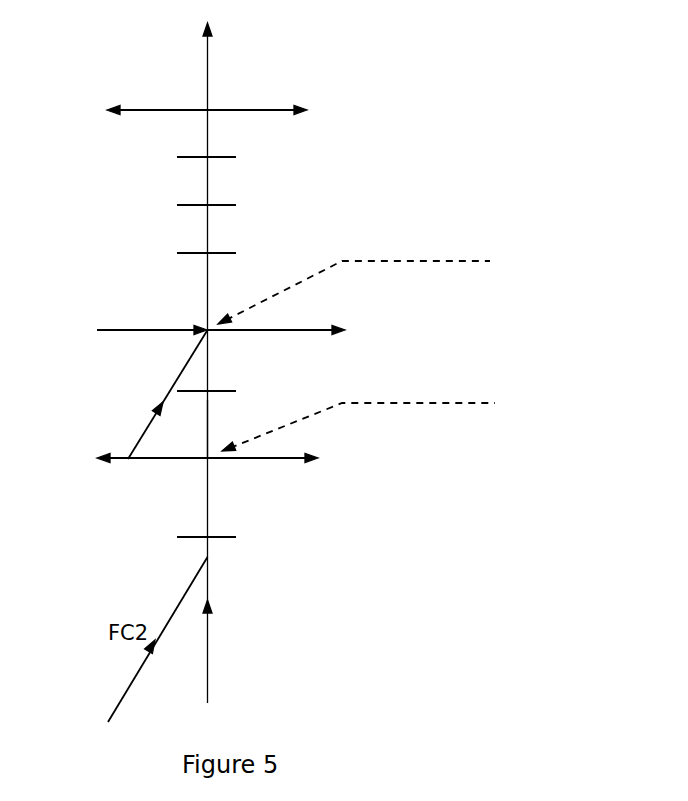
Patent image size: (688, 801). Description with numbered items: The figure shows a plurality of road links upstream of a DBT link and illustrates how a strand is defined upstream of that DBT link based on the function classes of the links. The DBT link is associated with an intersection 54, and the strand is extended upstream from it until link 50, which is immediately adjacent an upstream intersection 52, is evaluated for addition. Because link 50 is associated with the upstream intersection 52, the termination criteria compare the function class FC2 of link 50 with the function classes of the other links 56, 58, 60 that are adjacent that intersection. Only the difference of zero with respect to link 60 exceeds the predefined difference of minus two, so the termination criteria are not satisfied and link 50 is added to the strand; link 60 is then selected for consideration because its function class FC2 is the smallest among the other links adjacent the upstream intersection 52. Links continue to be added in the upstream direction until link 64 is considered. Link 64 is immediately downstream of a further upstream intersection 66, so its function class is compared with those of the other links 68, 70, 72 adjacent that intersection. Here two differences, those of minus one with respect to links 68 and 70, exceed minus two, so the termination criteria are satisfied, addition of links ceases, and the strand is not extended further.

The link 50 is at (208, 278).
The upstream intersection 52 is at (376, 288).
The intersection 54 is at (218, 98).
The link 56 is at (155, 325).
The link 58 is at (180, 368).
The link 60 is at (208, 380).
The link 64 is at (207, 428).
The upstream intersection 66 is at (374, 423).
The link 68 is at (158, 460).
The link 70 is at (207, 525).
The link 72 is at (268, 458).